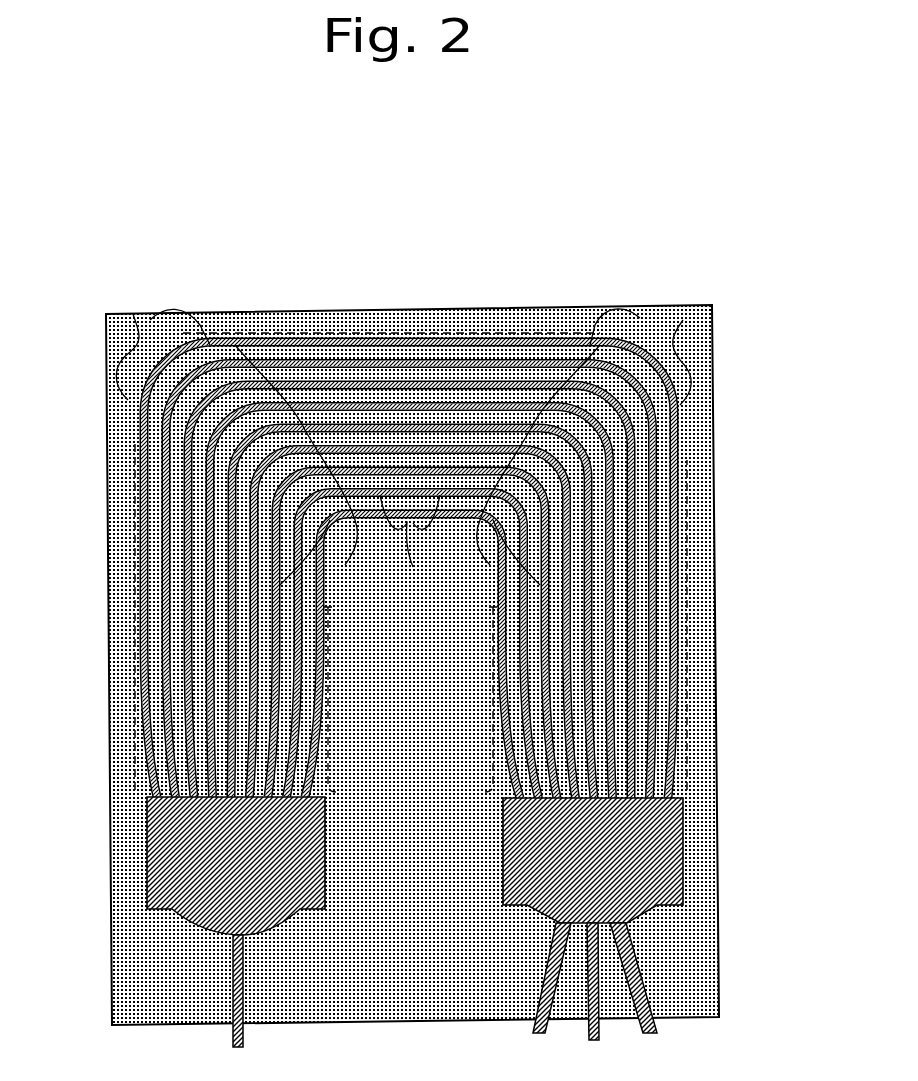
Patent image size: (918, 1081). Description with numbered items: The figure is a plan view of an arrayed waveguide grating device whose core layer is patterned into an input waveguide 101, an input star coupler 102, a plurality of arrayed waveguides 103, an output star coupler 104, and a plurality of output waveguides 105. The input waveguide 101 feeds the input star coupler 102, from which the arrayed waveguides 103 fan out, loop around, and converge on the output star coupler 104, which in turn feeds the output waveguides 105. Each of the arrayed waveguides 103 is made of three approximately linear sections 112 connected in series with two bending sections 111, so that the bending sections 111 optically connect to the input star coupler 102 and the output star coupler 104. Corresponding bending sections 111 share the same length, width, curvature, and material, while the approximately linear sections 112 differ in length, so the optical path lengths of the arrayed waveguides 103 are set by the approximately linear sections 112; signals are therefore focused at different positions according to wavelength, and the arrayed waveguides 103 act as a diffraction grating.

The input waveguide 101 is at (240, 985).
The input star coupler 102 is at (170, 848).
The arrayed waveguides 103 is at (730, 322).
The output star coupler 104 is at (655, 843).
The output waveguides 105 is at (627, 967).
The bending section 111 is at (133, 314).
The approximately linear sections 112 is at (493, 623).